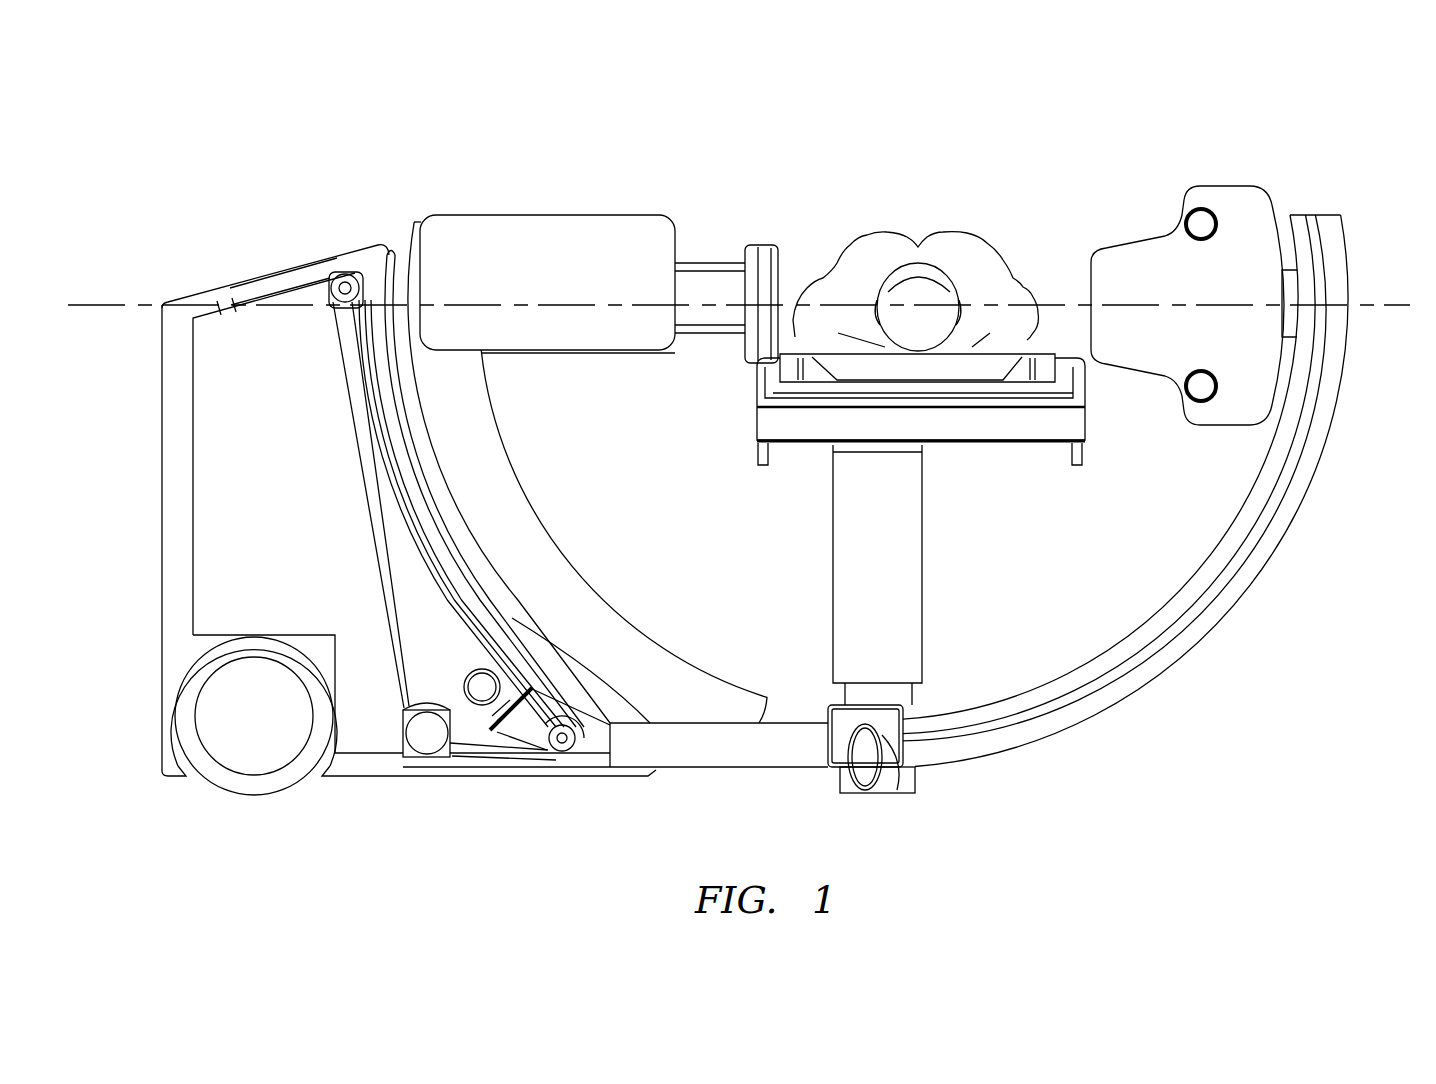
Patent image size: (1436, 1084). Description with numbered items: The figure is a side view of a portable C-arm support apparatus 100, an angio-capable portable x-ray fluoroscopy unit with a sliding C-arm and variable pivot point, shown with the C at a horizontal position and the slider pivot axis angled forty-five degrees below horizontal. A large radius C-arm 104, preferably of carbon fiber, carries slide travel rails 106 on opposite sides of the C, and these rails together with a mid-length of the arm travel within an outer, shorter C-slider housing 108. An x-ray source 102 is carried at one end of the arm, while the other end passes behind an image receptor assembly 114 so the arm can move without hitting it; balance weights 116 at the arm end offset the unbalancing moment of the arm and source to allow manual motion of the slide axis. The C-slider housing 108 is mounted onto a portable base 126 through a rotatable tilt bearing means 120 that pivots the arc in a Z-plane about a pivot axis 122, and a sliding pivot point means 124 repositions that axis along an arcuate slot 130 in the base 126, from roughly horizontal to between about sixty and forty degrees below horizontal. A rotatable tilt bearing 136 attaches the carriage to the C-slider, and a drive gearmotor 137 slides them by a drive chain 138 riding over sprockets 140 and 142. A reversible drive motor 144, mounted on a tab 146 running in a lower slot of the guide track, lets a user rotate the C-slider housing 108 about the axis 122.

The portable C-arm support apparatus 100 is at (636, 160).
The x-ray source 102 is at (1147, 285).
The C-arm 104 is at (1260, 577).
The slide travel rail 106 is at (1085, 692).
The C-slider housing 108 is at (697, 690).
The image receptor assembly 114 is at (772, 256).
The balance weights 116 is at (500, 258).
The rotatable tilt bearing means 120 is at (513, 605).
The pivot axis 122 is at (1408, 301).
The sliding pivot point means 124 is at (386, 734).
The portable base 126 is at (198, 304).
The arcuate slot 130 is at (437, 512).
The rotatable tilt bearing 136 is at (552, 660).
The drive gearmotor 137 is at (427, 740).
The drive chain 138 is at (370, 492).
The sprocket 140 is at (338, 247).
The sprocket 142 is at (563, 765).
The reversible drive motor 144 is at (478, 686).
The tab 146 is at (515, 713).